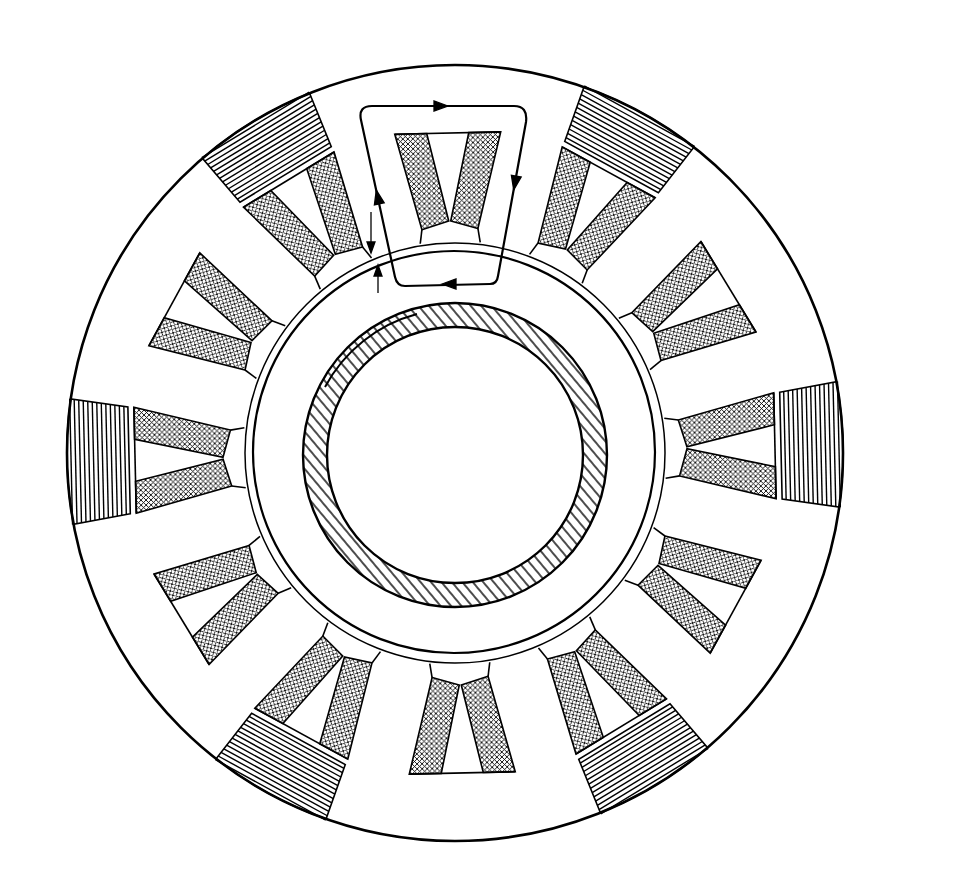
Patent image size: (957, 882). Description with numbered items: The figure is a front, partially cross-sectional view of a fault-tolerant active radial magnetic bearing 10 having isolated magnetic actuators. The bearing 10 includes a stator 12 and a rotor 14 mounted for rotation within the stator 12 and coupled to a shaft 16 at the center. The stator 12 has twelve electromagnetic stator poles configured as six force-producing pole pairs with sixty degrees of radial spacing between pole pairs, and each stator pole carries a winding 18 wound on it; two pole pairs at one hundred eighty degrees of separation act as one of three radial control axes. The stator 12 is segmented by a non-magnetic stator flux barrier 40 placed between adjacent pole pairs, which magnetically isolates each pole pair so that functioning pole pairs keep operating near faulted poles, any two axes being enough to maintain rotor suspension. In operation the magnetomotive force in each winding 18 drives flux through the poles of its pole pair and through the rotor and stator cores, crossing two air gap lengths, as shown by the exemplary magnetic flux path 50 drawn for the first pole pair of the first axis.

The active radial magnetic bearing 10 is at (638, 58).
The stator 12 is at (188, 182).
The rotor 14 is at (635, 402).
The shaft 16 is at (455, 455).
The winding 18 is at (153, 330).
The stator flux barrier 40 is at (662, 128).
The magnetic flux path 50 is at (522, 108).